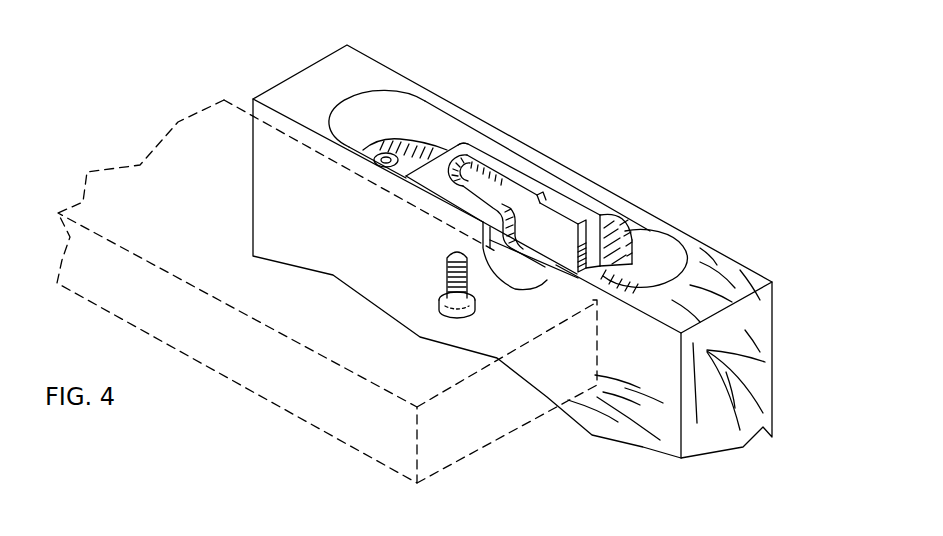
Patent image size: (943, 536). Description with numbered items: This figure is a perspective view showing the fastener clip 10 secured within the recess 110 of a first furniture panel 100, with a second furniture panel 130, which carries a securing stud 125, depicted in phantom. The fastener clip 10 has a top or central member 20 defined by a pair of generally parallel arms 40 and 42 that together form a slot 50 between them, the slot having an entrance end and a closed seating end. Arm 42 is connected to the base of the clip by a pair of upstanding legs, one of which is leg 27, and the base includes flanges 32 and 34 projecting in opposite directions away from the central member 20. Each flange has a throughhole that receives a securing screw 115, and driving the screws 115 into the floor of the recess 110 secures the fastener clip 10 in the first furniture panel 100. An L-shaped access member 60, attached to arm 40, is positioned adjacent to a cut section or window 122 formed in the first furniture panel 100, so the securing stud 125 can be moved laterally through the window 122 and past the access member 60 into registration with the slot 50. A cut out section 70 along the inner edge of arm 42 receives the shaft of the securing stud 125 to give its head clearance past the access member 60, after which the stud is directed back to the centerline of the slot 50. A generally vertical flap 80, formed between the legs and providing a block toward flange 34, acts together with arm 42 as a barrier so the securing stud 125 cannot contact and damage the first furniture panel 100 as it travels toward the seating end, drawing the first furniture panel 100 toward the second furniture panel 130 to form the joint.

The fastener clip 10 is at (513, 140).
The central member 20 is at (540, 182).
The upstanding leg 27 is at (620, 236).
The flange 32 is at (405, 142).
The flange 34 is at (643, 262).
The arm 40 is at (452, 176).
The arm 42 is at (560, 190).
The slot 50 is at (503, 195).
The access member 60 is at (524, 252).
The cut out section 70 is at (614, 215).
The flap 80 is at (593, 282).
The first furniture panel 100 is at (766, 376).
The recess 110 is at (627, 272).
The securing screw 115 is at (382, 155).
The window 122 is at (508, 276).
The securing stud 125 is at (443, 313).
The second furniture panel 130 is at (157, 167).